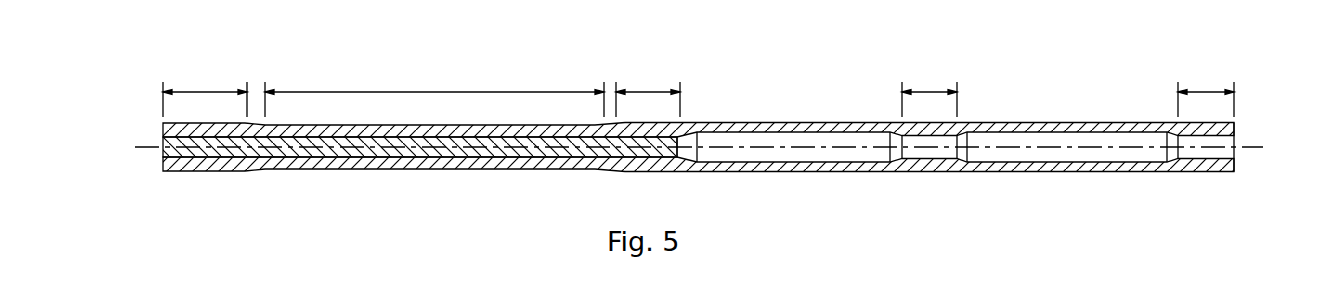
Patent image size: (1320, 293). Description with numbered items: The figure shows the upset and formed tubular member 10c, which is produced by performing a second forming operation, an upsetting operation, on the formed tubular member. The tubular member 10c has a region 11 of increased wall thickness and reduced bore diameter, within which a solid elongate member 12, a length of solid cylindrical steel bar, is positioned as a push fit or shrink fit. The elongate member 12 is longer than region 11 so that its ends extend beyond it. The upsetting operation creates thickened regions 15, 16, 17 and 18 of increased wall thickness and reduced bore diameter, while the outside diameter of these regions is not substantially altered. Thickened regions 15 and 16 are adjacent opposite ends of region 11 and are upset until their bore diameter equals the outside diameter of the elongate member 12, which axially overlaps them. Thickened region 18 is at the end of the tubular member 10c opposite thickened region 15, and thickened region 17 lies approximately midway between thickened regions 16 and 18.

The upset and formed tubular member 10c is at (1027, 168).
The solid elongate member 12 is at (382, 150).
The thickened region 15 is at (212, 92).
The region of increased wall thickness 11 is at (430, 92).
The thickened region 16 is at (650, 92).
The thickened region 17 is at (927, 92).
The thickened region 18 is at (1207, 92).